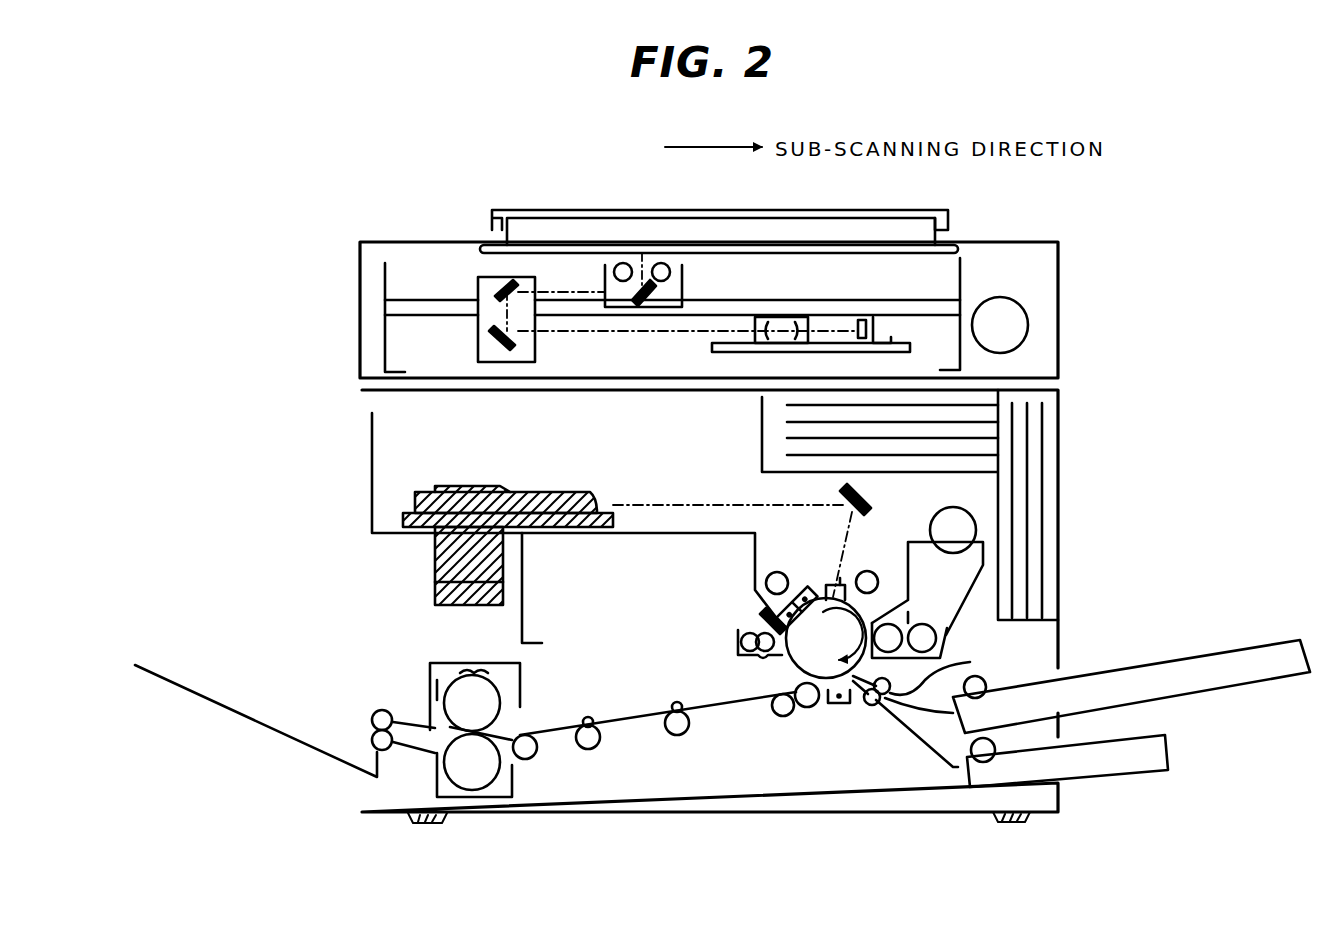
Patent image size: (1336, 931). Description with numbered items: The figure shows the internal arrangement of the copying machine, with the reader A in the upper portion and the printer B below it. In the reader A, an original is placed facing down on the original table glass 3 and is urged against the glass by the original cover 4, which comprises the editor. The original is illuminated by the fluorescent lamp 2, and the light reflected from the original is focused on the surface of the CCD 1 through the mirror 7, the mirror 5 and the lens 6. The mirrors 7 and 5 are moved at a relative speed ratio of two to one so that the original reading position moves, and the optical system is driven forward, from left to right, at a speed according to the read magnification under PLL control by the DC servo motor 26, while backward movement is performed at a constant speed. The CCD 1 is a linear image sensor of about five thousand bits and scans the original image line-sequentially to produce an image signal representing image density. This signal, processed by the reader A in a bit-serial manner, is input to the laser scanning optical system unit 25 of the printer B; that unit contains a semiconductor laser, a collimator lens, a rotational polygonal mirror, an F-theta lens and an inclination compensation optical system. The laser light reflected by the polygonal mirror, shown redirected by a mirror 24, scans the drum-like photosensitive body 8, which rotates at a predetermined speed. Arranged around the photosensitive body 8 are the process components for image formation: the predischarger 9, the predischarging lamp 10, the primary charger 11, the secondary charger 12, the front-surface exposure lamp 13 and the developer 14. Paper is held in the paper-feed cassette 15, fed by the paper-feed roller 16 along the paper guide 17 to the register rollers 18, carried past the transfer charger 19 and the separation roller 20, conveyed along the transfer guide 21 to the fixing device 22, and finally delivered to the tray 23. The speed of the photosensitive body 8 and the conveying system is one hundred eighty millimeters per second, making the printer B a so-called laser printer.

The CCD 1 is at (876, 324).
The fluorescent lamp 2 is at (662, 262).
The original table glass 3 is at (801, 245).
The original cover 4 is at (914, 212).
The mirror 5 is at (496, 286).
The lens 6 is at (780, 323).
The mirror 7 is at (660, 300).
The photosensitive body 8 is at (795, 674).
The predischarger 9 is at (787, 596).
The predischarging lamp 10 is at (772, 572).
The primary charger 11 is at (808, 596).
The secondary charger 12 is at (846, 580).
The front-surface exposure lamp 13 is at (874, 572).
The developer 14 is at (944, 630).
The paper-feed cassette 15 is at (1033, 691).
The paper-feed roller 16 is at (980, 680).
The paper guide 17 is at (922, 706).
The register rollers 18 is at (874, 708).
The transfer charger 19 is at (835, 706).
The separation roller 20 is at (808, 714).
The transfer guide 21 is at (722, 710).
The fixing device 22 is at (501, 694).
The tray 23 is at (248, 720).
The reflecting mirror 24 is at (868, 494).
The laser scanning optical system unit 25 is at (572, 496).
The DC servo motor 26 is at (1000, 300).
The reader A is at (1050, 287).
The printer B is at (1042, 482).